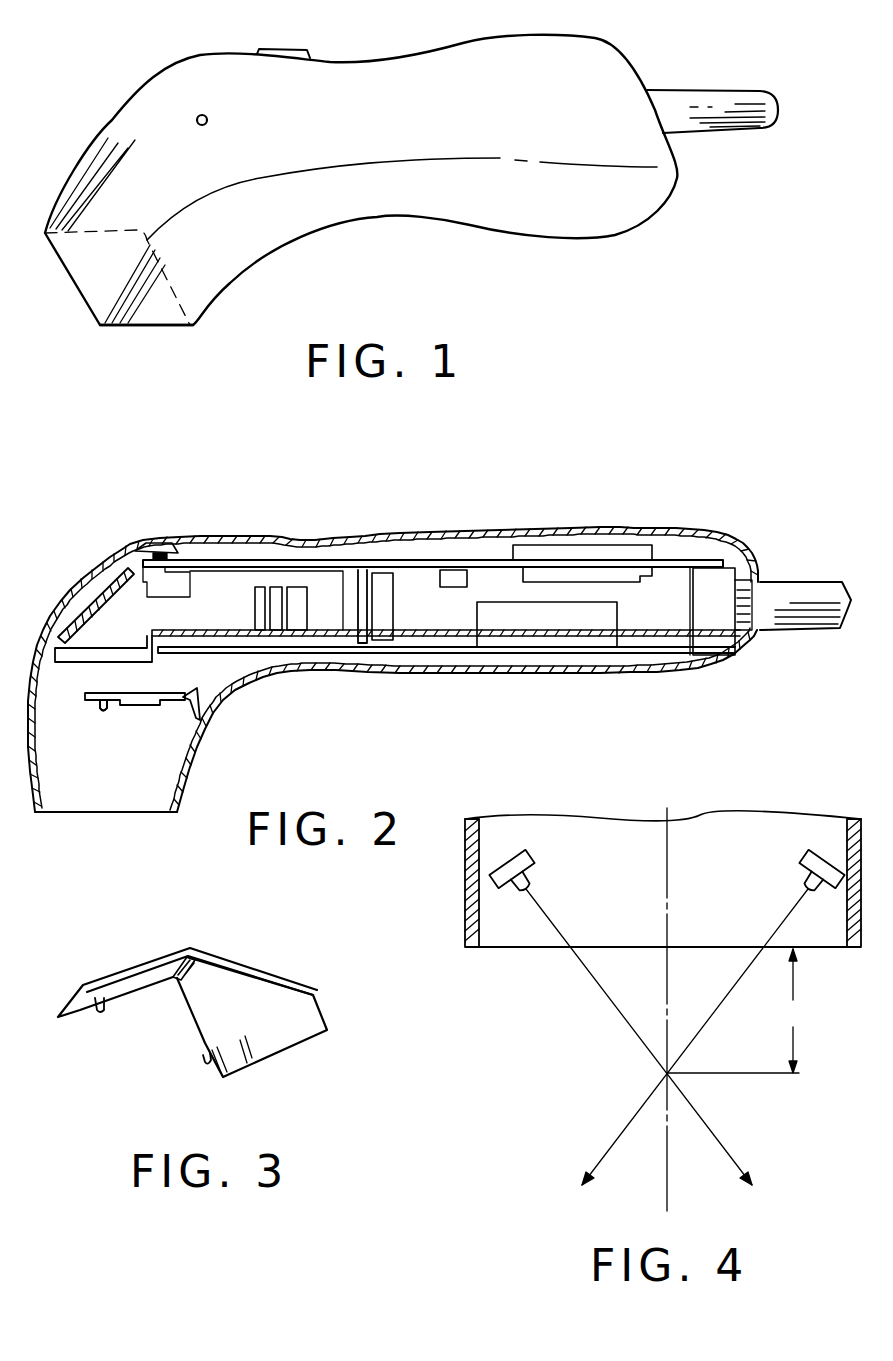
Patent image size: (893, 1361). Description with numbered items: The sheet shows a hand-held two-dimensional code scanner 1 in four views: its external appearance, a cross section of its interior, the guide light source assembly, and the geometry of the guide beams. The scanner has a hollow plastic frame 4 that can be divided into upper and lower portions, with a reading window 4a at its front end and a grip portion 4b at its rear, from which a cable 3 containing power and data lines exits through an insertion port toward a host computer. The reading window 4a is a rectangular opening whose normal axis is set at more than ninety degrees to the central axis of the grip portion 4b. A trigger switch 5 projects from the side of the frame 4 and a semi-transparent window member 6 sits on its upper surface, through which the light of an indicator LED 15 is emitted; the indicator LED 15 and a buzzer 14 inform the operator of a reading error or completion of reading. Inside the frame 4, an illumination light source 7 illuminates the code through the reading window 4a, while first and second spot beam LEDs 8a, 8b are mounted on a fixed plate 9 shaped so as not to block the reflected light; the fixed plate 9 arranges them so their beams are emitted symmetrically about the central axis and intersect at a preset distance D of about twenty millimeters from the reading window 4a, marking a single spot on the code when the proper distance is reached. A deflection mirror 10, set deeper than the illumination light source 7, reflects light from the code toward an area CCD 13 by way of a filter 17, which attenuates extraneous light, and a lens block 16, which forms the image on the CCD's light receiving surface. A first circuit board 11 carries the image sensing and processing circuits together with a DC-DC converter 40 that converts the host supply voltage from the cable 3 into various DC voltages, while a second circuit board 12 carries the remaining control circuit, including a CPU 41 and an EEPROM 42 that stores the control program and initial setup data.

In FIG. 1, the 2-dimensional code scanner 1 is at (387, 77).
In FIG. 2, the 2-dimensional code scanner 1 is at (270, 535).
In FIG. 1, the cable 3 is at (730, 125).
In FIG. 2, the cable 3 is at (800, 590).
In FIG. 1, the frame 4 is at (377, 218).
In FIG. 2, the frame 4 is at (345, 537).
In FIG. 1, the reading window 4a is at (127, 330).
In FIG. 2, the reading window 4a is at (137, 813).
In FIG. 2, the grip portion 4b is at (623, 677).
In FIG. 1, the trigger switch 5 is at (290, 47).
In FIG. 1, the window member 6 is at (208, 116).
In FIG. 2, the window member 6 is at (162, 538).
In FIG. 2, the illumination light source 7 is at (190, 705).
In FIG. 2, the first spot beam LED 8a is at (103, 712).
In FIG. 3, the first spot beam LED 8a is at (102, 1013).
In FIG. 2, the second spot beam LED 8b is at (89, 744).
In FIG. 3, the second spot beam LED 8b is at (207, 1043).
In FIG. 2, the fixed plate 9 is at (130, 706).
In FIG. 3, the fixed plate 9 is at (275, 1040).
In FIG. 2, the deflection mirror 10 is at (107, 590).
In FIG. 2, the first circuit board 11 is at (458, 657).
In FIG. 2, the second circuit board 12 is at (495, 562).
In FIG. 2, the area CCD 13 is at (360, 578).
In FIG. 2, the buzzer 14 is at (453, 578).
In FIG. 2, the indicator LED 15 is at (133, 540).
In FIG. 2, the lens block 16 is at (297, 631).
In FIG. 2, the filter 17 is at (267, 631).
In FIG. 2, the DC-DC converter 40 is at (557, 637).
In FIG. 2, the CPU 41 is at (640, 577).
In FIG. 2, the EEPROM 42 is at (573, 552).
In FIG. 4, the preset distance D is at (793, 1014).